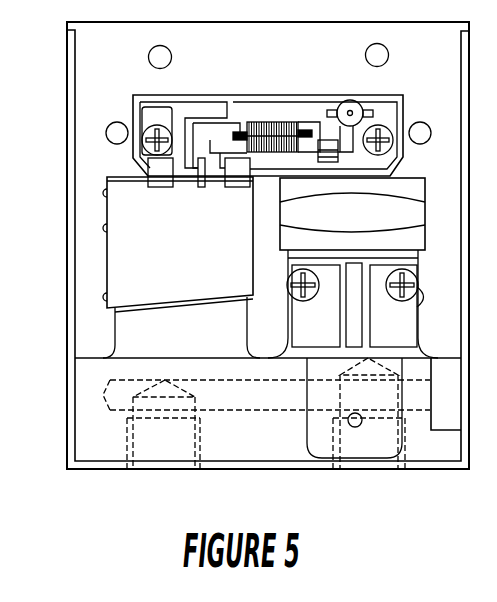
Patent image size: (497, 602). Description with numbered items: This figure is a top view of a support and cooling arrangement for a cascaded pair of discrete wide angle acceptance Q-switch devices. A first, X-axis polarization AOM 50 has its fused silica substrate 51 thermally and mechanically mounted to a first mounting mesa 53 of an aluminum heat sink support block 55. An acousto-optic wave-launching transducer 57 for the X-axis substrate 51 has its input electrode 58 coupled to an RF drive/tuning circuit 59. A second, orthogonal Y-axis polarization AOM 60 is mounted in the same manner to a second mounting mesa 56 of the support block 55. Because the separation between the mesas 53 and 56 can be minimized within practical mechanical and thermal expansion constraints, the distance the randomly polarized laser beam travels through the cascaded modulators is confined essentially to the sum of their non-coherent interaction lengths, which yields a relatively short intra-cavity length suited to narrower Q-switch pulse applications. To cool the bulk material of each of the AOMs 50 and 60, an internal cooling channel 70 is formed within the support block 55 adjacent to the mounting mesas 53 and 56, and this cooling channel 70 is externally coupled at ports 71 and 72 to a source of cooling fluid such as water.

The first AOM 50 is at (188, 272).
The fused silica substrate 51 is at (117, 263).
The first mounting mesa 53 is at (122, 328).
The support block 55 is at (88, 377).
The second mounting mesa 56 is at (407, 328).
The acousto-optic wave-launching transducer 57 is at (107, 180).
The input electrode 58 is at (122, 178).
The RF drive/tuning circuit 59 is at (268, 93).
The second AOM 60 is at (408, 177).
The internal cooling channel 70 is at (252, 403).
The port 71 is at (160, 470).
The port 72 is at (350, 470).